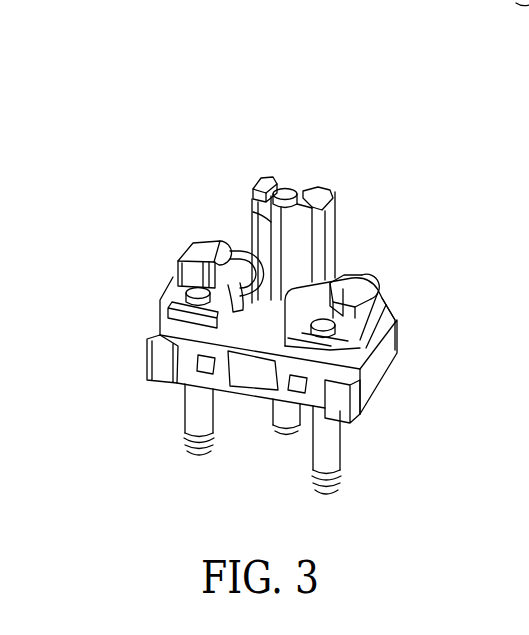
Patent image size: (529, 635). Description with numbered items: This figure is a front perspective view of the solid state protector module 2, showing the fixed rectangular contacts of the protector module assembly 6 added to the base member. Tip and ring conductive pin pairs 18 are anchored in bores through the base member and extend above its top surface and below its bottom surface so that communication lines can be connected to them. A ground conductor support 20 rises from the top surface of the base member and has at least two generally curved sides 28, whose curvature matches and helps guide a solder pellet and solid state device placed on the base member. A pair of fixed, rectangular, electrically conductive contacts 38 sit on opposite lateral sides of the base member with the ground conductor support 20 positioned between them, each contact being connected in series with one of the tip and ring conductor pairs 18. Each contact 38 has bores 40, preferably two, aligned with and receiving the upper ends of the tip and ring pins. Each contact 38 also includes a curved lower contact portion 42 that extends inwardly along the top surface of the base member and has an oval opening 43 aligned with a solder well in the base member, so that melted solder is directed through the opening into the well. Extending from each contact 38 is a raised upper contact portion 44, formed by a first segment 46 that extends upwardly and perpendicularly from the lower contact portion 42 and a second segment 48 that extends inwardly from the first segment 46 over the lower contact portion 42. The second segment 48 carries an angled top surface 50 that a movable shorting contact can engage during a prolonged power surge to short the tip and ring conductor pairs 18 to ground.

The solid state protector module 2 is at (212, 118).
The protector module assembly 6 is at (382, 270).
The tip and ring conductive pin pairs 18 is at (512, 7).
The ground conductor support 20 is at (288, 202).
The curved sides 28 is at (251, 222).
The fixed rectangular electrically conductive contacts 38 is at (170, 293).
The bores 40 is at (195, 317).
The curved lower contact portion 42 is at (291, 286).
The oval opening 43 is at (243, 326).
The raised upper contact portion 44 is at (173, 240).
The first segment 46 is at (176, 268).
The second segment 48 is at (200, 250).
The angled top surface 50 is at (213, 247).